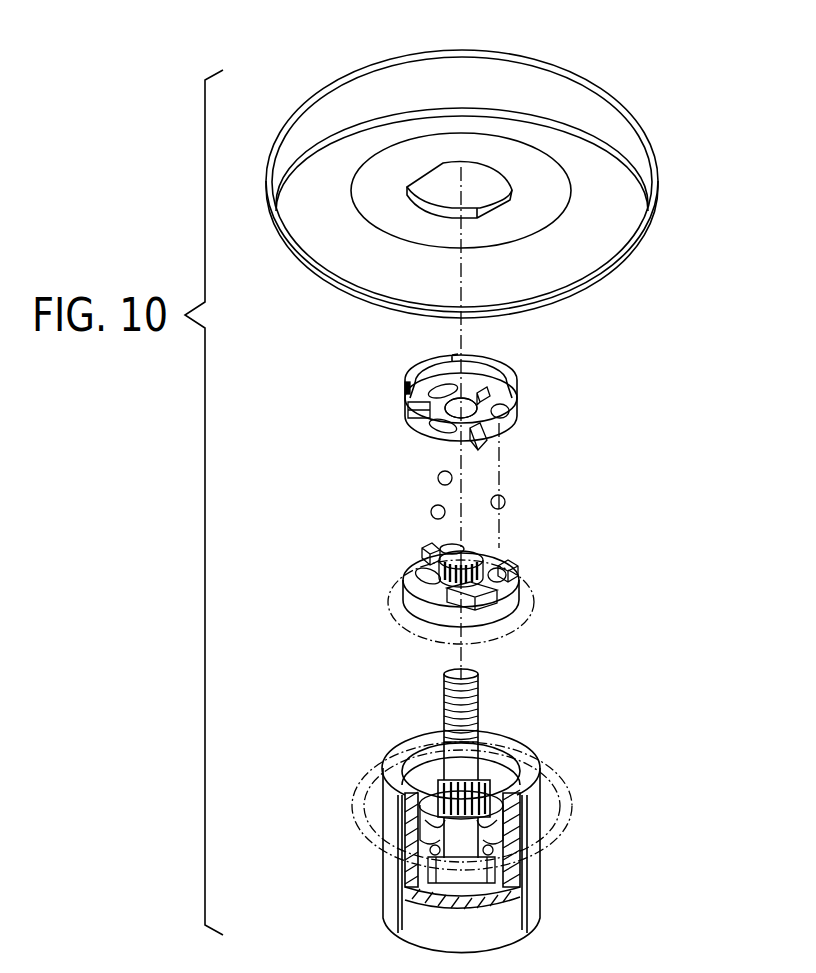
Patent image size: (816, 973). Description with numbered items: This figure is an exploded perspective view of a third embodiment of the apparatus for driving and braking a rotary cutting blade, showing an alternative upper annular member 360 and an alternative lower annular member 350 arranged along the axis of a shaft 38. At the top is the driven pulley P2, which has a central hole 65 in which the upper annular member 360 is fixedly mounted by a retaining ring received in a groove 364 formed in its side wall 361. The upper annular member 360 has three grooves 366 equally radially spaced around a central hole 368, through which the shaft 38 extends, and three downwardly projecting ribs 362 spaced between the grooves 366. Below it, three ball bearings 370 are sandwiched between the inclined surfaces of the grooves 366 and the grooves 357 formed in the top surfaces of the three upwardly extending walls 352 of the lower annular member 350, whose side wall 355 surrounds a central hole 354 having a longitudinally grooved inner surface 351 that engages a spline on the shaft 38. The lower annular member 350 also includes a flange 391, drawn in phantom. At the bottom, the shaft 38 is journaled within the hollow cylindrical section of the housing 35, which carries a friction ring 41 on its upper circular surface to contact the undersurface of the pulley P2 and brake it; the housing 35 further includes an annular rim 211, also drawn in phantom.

The hole 65 is at (477, 182).
The pulley P2 is at (668, 186).
The upper annular member 360 is at (612, 399).
The side wall 361 is at (512, 392).
The downwardly projecting ribs 362 is at (490, 395).
The groove 364 is at (512, 377).
The grooves 366 is at (428, 382).
The central hole 368 is at (467, 413).
The ball bearings 370 is at (430, 512).
The lower annular member 350 is at (612, 571).
The longitudinally grooved inner surface 351 is at (410, 577).
The upwardly extending walls 352 is at (422, 552).
The central hole 354 is at (480, 557).
The side wall 355 is at (493, 605).
The groove 357 is at (447, 547).
The flange 391 is at (498, 642).
The shaft 38 is at (472, 757).
The friction ring 41 is at (522, 748).
The annular rim 211 is at (579, 807).
The housing 35 is at (570, 880).